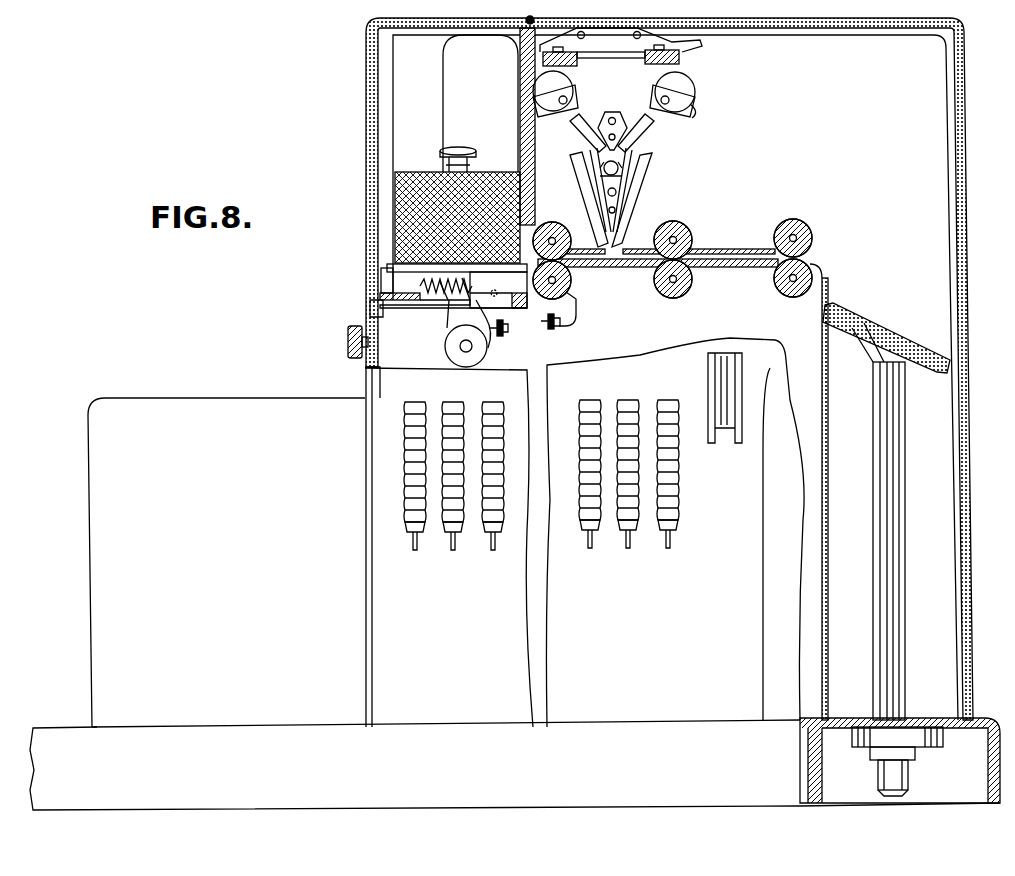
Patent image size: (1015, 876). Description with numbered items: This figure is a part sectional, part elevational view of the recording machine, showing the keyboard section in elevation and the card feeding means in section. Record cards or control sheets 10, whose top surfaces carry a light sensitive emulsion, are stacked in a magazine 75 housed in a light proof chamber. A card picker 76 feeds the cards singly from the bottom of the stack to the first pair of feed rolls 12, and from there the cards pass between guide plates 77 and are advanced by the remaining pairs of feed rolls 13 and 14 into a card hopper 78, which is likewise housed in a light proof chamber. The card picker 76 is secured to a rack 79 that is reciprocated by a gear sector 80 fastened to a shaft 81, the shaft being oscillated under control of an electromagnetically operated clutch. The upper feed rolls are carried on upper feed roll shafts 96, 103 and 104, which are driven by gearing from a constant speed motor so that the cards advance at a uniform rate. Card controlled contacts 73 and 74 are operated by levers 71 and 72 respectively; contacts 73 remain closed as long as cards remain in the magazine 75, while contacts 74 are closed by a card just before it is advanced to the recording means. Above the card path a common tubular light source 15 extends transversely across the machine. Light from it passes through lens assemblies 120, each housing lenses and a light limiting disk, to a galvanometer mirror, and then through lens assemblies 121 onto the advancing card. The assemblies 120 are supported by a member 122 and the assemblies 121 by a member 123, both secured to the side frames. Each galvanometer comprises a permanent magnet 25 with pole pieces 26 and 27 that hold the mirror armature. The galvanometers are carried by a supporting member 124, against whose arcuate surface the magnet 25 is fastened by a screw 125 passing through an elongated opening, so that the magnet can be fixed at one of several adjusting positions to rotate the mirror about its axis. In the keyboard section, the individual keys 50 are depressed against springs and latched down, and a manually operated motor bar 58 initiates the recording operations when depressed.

The control sheet 10 is at (417, 174).
The first pair of feed rolls 12 is at (578, 296).
The pair of feed rolls 13 is at (693, 281).
The pair of feed rolls 14 is at (808, 268).
The light source 15 is at (618, 163).
The permanent magnet 25 is at (544, 88).
The pole piece 26 is at (572, 87).
The pole piece 27 is at (692, 105).
The keys 50 is at (667, 520).
The motor bar 58 is at (727, 407).
The lever 71 is at (441, 306).
The lever 72 is at (576, 304).
The card controlled contacts 73 is at (499, 337).
The card controlled contacts 74 is at (557, 330).
The magazine 75 is at (398, 119).
The card picker 76 is at (369, 271).
The guide plates 77 is at (735, 252).
The card hopper 78 is at (880, 530).
The rack 79 is at (432, 288).
The gear sector 80 is at (465, 313).
The shaft 81 is at (460, 348).
The upper feed roll shaft 96 is at (795, 231).
The upper feed roll shaft 103 is at (692, 229).
The upper feed roll shaft 104 is at (553, 233).
The lens assembly 120 is at (586, 117).
The lens assembly 121 is at (580, 172).
The supporting member 122 is at (612, 112).
The supporting member 123 is at (642, 205).
The supporting member 124 is at (681, 42).
The screw 125 is at (682, 51).